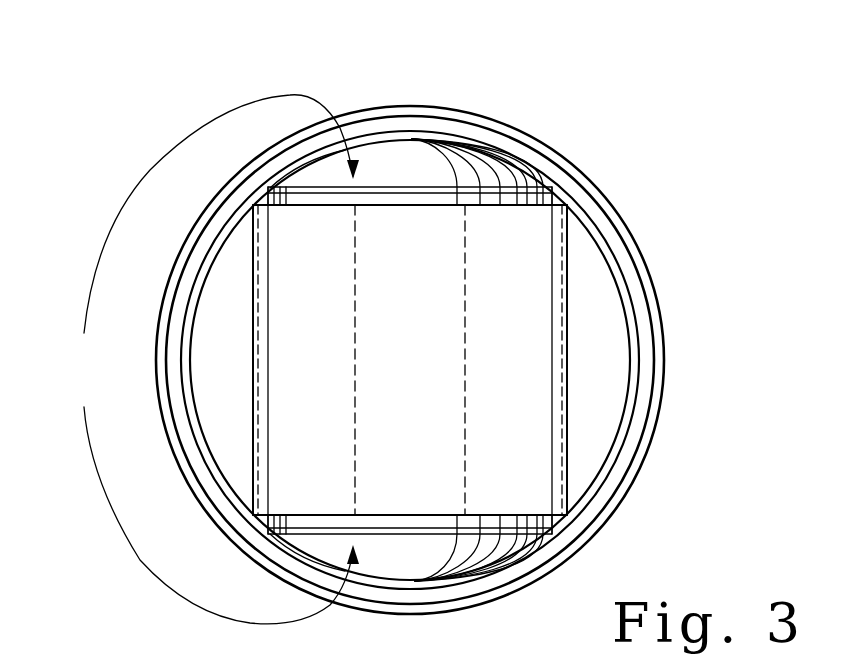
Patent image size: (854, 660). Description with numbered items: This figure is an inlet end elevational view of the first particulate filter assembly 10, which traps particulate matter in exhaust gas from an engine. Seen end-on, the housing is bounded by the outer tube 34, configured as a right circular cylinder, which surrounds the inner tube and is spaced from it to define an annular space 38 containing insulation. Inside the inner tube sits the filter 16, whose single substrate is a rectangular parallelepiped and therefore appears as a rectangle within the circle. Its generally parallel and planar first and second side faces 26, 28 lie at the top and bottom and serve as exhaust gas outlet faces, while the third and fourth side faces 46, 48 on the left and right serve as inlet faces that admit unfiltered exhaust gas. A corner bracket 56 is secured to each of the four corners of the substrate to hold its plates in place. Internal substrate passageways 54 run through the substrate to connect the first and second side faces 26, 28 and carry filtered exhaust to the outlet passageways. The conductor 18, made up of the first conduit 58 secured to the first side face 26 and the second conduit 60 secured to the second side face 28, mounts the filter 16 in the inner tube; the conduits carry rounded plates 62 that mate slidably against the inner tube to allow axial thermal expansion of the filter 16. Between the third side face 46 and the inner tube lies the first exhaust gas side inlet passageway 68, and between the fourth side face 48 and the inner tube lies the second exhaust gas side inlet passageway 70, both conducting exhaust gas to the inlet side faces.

The first particulate filter assembly 10 is at (131, 157).
The filter 16 is at (592, 331).
The conductor 18 is at (191, 359).
The first side face 26 is at (326, 194).
The second side face 28 is at (326, 526).
The outer tube 34 is at (440, 106).
The annular space 38 is at (270, 171).
The third side face 46 is at (256, 378).
The fourth side face 48 is at (560, 371).
The internal substrate passageway 54 is at (354, 410).
The corner bracket 56 is at (258, 322).
The first conduit 58 is at (211, 230).
The second conduit 60 is at (211, 501).
The rounded plate 62 is at (478, 172).
The first exhaust gas side inlet passageway 68 is at (196, 418).
The second exhaust gas side inlet passageway 70 is at (630, 416).